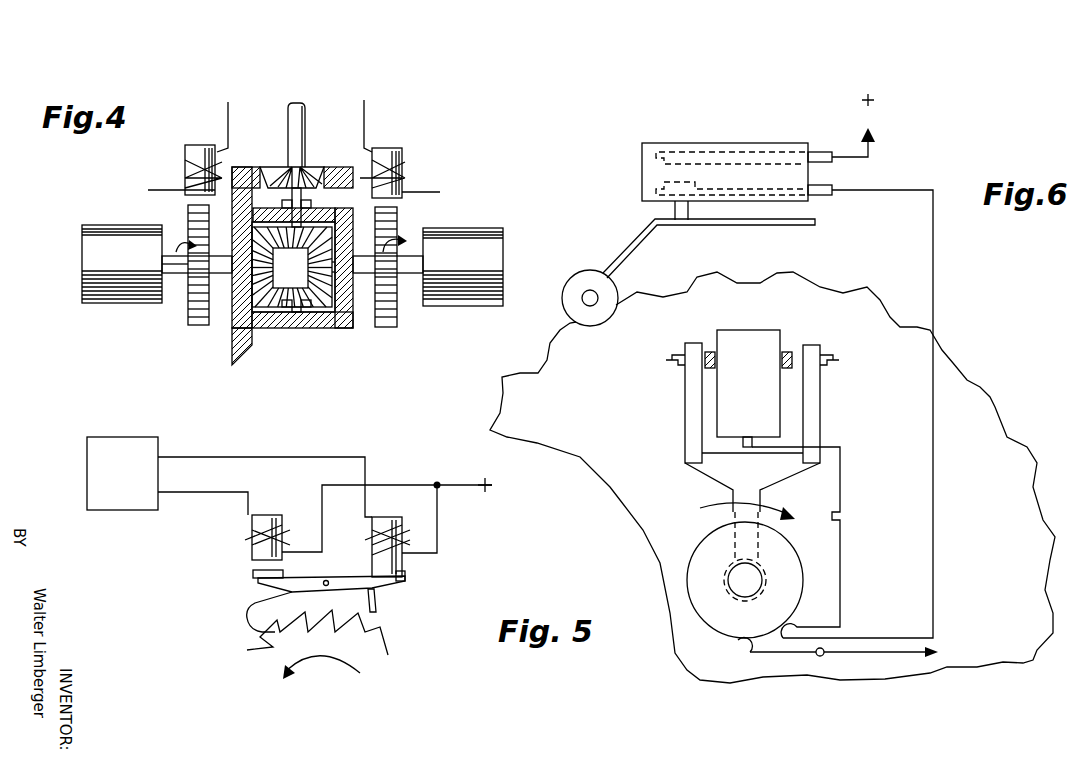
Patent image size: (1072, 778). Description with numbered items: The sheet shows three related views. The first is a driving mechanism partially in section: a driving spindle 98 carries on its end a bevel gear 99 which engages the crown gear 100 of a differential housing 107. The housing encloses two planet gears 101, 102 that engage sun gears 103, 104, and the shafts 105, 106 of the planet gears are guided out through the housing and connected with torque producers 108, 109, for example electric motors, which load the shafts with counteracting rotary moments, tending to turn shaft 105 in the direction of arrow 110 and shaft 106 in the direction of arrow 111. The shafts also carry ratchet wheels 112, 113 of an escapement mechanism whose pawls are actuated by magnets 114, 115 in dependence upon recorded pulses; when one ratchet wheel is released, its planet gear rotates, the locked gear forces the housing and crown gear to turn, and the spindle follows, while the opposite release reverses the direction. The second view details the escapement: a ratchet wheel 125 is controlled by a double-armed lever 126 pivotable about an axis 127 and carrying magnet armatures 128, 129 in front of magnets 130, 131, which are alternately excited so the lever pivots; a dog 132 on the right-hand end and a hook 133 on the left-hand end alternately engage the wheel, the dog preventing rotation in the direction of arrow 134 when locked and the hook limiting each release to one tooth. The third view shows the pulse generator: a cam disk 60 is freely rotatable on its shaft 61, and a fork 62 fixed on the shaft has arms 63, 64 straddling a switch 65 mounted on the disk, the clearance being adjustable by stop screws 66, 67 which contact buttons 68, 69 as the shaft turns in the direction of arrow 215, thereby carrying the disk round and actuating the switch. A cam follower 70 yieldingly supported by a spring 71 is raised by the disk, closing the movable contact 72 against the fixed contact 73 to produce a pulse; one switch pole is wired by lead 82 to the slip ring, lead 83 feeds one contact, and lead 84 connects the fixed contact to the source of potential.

In FIG. 4, the driving spindle 98 is at (303, 115).
In FIG. 4, the bevel gear 99 is at (314, 180).
In FIG. 4, the crown gear 100 is at (252, 340).
In FIG. 4, the planet gear 101 is at (230, 348).
In FIG. 4, the planet gear 102 is at (322, 295).
In FIG. 4, the sun gear 103 is at (314, 300).
In FIG. 4, the sun gear 104 is at (296, 232).
In FIG. 4, the shaft 105 is at (395, 250).
In FIG. 4, the shaft 106 is at (176, 266).
In FIG. 4, the differential housing 107 is at (346, 328).
In FIG. 4, the torque producer 108 is at (95, 243).
In FIG. 4, the torque producer 109 is at (485, 240).
In FIG. 4, the arrow 110 is at (402, 290).
In FIG. 4, the arrow 111 is at (182, 278).
In FIG. 4, the ratchet wheel 112 is at (385, 325).
In FIG. 4, the ratchet wheel 113 is at (197, 322).
In FIG. 4, the magnet 114 is at (395, 155).
In FIG. 4, the magnet 115 is at (198, 147).
In FIG. 5, the ratchet wheel 125 is at (277, 662).
In FIG. 5, the double-armed lever 126 is at (385, 590).
In FIG. 5, the axis 127 is at (329, 580).
In FIG. 5, the magnet armature 128 is at (405, 580).
In FIG. 5, the magnet armature 129 is at (256, 575).
In FIG. 5, the magnet 130 is at (400, 540).
In FIG. 5, the magnet 131 is at (258, 528).
In FIG. 5, the dog 132 is at (375, 614).
In FIG. 5, the hook 133 is at (248, 620).
In FIG. 5, the arrow 134 is at (360, 668).
In FIG. 6, the cam disk 60 is at (962, 372).
In FIG. 6, the shaft 61 is at (742, 588).
In FIG. 6, the fork 62 is at (760, 497).
In FIG. 6, the arm 63 is at (692, 405).
In FIG. 6, the arm 64 is at (812, 412).
In FIG. 6, the switch 65 is at (748, 338).
In FIG. 6, the stop screw 66 is at (672, 357).
In FIG. 6, the stop screw 67 is at (833, 357).
In FIG. 6, the button 68 is at (710, 352).
In FIG. 6, the button 69 is at (787, 352).
In FIG. 6, the cam follower 70 is at (590, 276).
In FIG. 6, the spring 71 is at (632, 250).
In FIG. 6, the movable contact 72 is at (655, 185).
In FIG. 6, the fixed contact 73 is at (683, 152).
In FIG. 6, the lead 82 is at (840, 590).
In FIG. 6, the lead 83 is at (933, 278).
In FIG. 6, the lead 84 is at (851, 128).
In FIG. 6, the arrow 215 is at (722, 512).